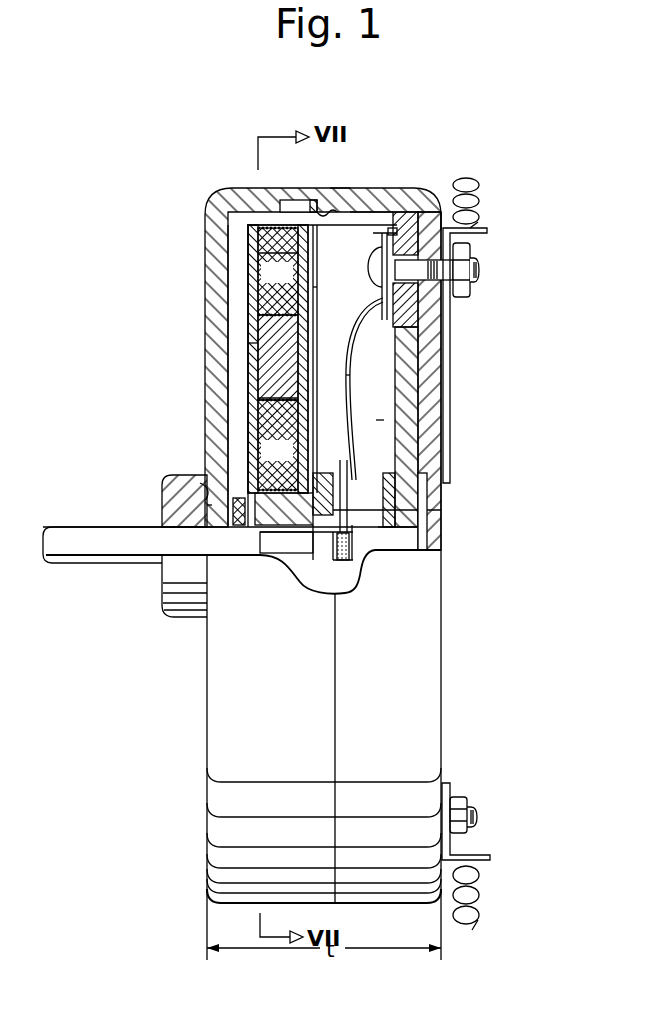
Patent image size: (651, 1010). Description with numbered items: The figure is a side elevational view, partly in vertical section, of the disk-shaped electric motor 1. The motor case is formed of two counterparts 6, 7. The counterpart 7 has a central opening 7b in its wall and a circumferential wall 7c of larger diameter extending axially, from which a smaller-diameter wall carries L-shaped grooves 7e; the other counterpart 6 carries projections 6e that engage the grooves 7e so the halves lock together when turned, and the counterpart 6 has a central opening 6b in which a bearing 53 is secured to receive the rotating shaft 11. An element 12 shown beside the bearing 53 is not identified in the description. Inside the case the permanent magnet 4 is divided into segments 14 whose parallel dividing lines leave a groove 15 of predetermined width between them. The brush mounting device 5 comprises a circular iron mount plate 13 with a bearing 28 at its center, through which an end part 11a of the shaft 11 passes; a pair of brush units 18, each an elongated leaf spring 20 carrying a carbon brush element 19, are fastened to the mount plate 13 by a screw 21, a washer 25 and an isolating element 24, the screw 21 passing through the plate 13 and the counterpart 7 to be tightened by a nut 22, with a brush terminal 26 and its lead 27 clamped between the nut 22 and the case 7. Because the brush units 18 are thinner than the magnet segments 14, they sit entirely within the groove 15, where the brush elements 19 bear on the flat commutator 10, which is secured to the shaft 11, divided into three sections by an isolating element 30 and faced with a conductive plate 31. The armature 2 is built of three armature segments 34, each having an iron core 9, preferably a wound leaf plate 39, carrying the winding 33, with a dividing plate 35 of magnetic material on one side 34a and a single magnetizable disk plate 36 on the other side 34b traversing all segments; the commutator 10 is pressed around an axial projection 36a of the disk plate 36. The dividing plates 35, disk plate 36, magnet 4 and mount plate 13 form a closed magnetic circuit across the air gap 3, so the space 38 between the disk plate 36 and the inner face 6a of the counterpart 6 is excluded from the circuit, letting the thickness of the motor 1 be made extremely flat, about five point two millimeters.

The disk-shaped electric motor 1 is at (213, 182).
The armature 2 is at (283, 224).
The air gap 3 is at (314, 348).
The permanent magnet 4 is at (396, 213).
The brush mounting device 5 is at (449, 208).
The counterpart of motor case 6 is at (205, 206).
The inner face 6a is at (240, 368).
The opening 6b is at (200, 478).
The projections 6e is at (338, 195).
The counterpart of motor case 7 is at (442, 354).
The opening 7b is at (288, 200).
The wall of larger diameter 7c is at (378, 210).
The L-shaped grooves 7e is at (312, 203).
The iron core 9 is at (259, 343).
The commutator 10 is at (340, 510).
The rotating shaft 11 is at (88, 527).
The end part of rotating shaft 11a is at (441, 548).
The bearing 12 is at (207, 505).
The mount plate 13 is at (419, 322).
The permanent magnet segments 14 is at (420, 212).
The groove 15 is at (380, 423).
The brush units 18 is at (349, 410).
The carbon brush element 19 is at (372, 553).
The leaf spring 20 is at (347, 380).
The screw 21 is at (479, 270).
The nut 22 is at (471, 253).
The isolating element 24 is at (420, 302).
The washer 25 is at (380, 297).
The brush terminal 26 is at (487, 230).
The lead 27 is at (480, 190).
The bearing 28 is at (441, 522).
The isolating element 30 is at (383, 531).
The electrically conductive plate 31 is at (342, 463).
The electrically conductive wire or leaf 33 is at (260, 317).
The armature segments 34 is at (259, 247).
The one side of armature segment 34a is at (316, 287).
The other side of armature segment 34b is at (257, 253).
The dividing plate 35 is at (356, 212).
The disk plate 36 is at (256, 222).
The axial projection 36a is at (290, 545).
The space 38 is at (260, 398).
The wound leaf plate 39 is at (269, 328).
The bearing 53 is at (175, 478).